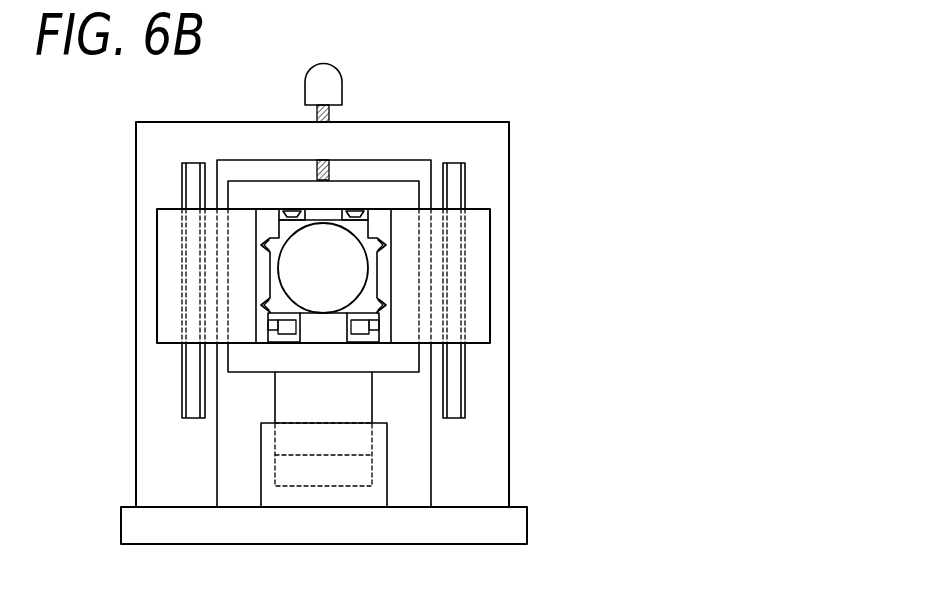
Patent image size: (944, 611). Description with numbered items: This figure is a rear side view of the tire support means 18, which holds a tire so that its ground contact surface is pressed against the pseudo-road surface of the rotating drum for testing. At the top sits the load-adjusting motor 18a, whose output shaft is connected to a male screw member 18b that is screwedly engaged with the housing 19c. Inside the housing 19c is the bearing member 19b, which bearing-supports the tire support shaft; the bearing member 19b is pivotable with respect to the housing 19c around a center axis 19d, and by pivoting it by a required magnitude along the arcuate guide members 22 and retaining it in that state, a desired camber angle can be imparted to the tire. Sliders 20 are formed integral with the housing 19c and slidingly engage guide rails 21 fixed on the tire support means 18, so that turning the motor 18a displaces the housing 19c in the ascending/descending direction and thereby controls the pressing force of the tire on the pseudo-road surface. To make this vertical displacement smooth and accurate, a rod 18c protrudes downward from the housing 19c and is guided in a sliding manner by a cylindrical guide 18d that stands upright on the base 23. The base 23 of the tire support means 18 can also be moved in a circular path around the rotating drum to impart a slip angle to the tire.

The tire support means 18 is at (471, 108).
The load-adjusting motor 18a is at (318, 75).
The male screw member 18b is at (292, 208).
The rod 18c is at (304, 403).
The cylindrical guide 18d is at (330, 493).
The bearing member 19b is at (335, 277).
The housing 19c is at (372, 193).
The center axis 19d is at (272, 328).
The sliders 20 is at (479, 315).
The guide rails 21 is at (190, 185).
The arcuate guide members 22 is at (313, 172).
The base 23 is at (513, 528).